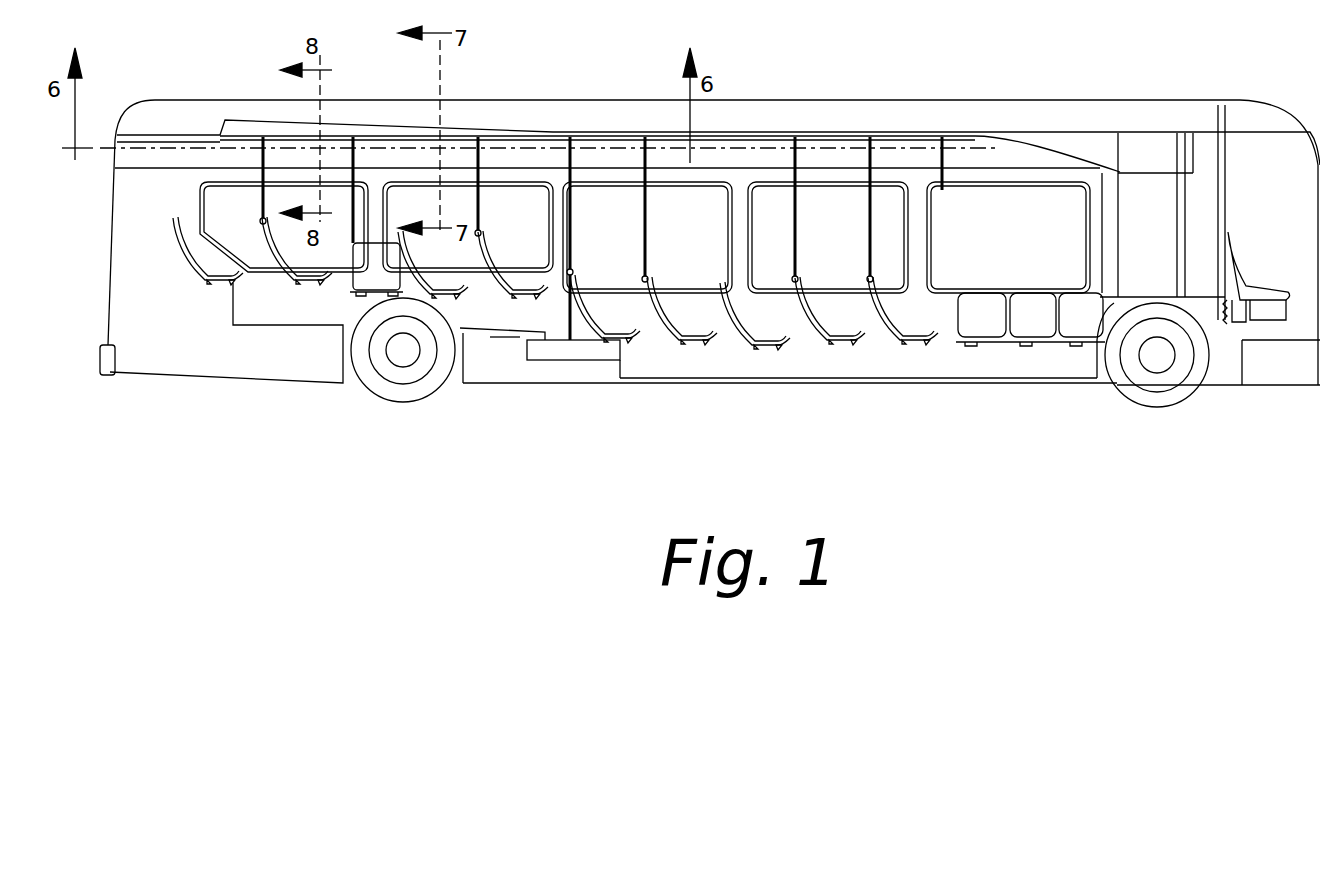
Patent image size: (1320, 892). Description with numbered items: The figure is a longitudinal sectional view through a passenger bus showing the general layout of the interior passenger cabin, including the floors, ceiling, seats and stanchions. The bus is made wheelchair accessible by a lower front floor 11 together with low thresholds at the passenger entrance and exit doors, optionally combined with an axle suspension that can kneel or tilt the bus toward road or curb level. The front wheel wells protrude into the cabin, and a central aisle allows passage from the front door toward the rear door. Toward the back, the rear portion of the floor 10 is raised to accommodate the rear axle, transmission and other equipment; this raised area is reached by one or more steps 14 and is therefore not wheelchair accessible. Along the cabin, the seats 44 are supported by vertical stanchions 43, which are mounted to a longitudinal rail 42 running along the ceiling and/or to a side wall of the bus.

The rear portion of the floor 10 is at (302, 327).
The lower front floor 11 is at (972, 382).
The steps 14 is at (570, 362).
The longitudinal rail 42 is at (430, 137).
The vertical stanchions 43 is at (795, 158).
The seats 44 is at (908, 350).